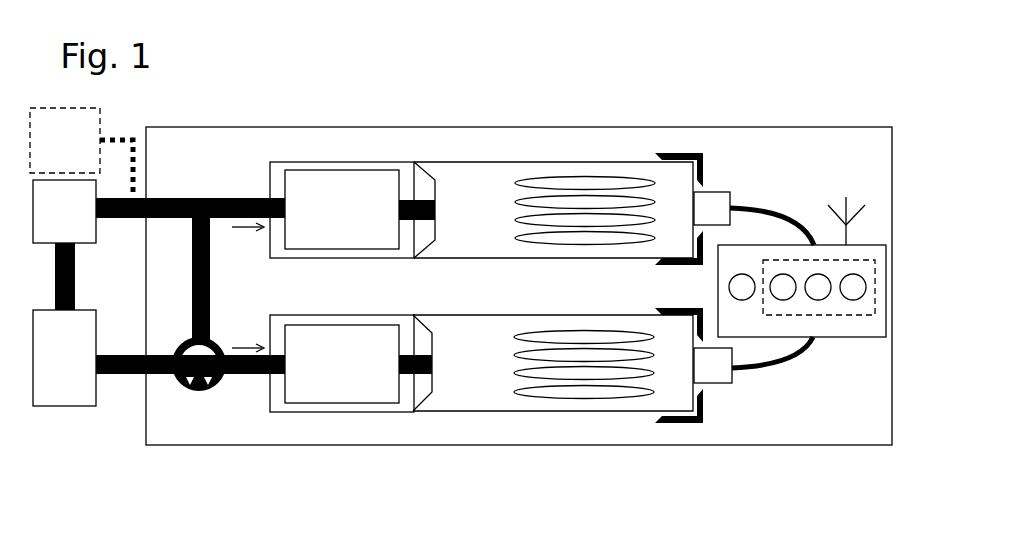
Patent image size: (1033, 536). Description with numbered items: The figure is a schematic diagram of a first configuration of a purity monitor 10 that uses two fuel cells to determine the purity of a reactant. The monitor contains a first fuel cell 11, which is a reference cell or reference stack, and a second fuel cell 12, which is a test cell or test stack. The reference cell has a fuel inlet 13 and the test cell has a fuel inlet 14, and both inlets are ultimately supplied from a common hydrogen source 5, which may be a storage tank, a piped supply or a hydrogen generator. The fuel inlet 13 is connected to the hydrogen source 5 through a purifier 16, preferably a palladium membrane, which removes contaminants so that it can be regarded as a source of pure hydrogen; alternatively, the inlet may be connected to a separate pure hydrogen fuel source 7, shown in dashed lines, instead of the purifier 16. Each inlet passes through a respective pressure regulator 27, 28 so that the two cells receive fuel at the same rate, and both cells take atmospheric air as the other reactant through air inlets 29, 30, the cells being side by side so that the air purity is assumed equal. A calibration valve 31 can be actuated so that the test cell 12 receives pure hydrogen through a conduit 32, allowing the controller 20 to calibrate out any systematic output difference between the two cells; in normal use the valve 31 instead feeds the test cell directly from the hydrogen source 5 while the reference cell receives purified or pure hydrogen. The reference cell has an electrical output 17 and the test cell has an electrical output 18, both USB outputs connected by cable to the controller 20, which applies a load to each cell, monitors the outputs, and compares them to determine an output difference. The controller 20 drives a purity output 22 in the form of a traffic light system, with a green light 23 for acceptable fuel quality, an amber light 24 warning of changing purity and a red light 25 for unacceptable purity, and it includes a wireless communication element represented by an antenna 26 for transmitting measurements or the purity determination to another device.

The hydrogen source 5 is at (56, 376).
The pure hydrogen fuel source 7 is at (58, 156).
The purity monitor 10 is at (288, 127).
The first fuel cell 11 is at (478, 195).
The second fuel cell 12 is at (473, 392).
The fuel inlet 13 is at (260, 199).
The fuel inlet 14 is at (231, 375).
The purifier 16 is at (64, 211).
The electrical output 17 is at (718, 206).
The electrical output 18 is at (716, 383).
The controller 20 is at (865, 305).
The purity output 22 is at (867, 287).
The green light 23 is at (783, 290).
The amber light 24 is at (818, 290).
The red light 25 is at (853, 290).
The antenna 26 is at (848, 225).
The pressure regulator 27 is at (343, 187).
The pressure regulator 28 is at (343, 385).
The air inlet 29 is at (585, 184).
The air inlet 30 is at (585, 392).
The calibration valve 31 is at (195, 392).
The conduit 32 is at (192, 282).